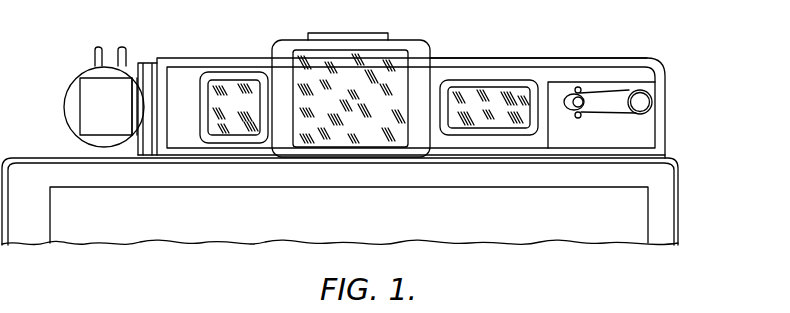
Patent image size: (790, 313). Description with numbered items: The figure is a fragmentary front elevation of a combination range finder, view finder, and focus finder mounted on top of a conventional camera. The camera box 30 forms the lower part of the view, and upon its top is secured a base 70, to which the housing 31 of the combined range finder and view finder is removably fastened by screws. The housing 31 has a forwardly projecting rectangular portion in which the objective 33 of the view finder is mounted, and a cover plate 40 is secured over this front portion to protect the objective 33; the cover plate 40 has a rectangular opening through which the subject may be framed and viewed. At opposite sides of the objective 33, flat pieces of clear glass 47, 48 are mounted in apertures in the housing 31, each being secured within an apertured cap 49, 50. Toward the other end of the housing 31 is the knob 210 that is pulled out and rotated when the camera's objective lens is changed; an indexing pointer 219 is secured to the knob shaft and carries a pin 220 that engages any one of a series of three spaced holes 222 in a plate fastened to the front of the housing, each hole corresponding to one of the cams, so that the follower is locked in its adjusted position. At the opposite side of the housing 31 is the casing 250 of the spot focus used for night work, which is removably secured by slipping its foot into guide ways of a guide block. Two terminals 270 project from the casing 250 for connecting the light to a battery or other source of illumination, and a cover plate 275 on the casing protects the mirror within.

The camera box 30 is at (665, 219).
The housing 31 is at (522, 63).
The objective 33 is at (301, 64).
The cover plate 40 is at (420, 51).
The flat piece of clear glass 47 is at (238, 88).
The flat piece of clear glass 48 is at (490, 98).
The apertured cap 49 is at (202, 108).
The apertured cap 50 is at (506, 133).
The base 70 is at (216, 156).
The knob 210 is at (648, 105).
The indexing pointer 219 is at (609, 110).
The pin 220 is at (577, 107).
The holes 222 is at (578, 87).
The casing 250 is at (72, 110).
The terminals 270 is at (124, 47).
The cover plate 275 is at (97, 88).